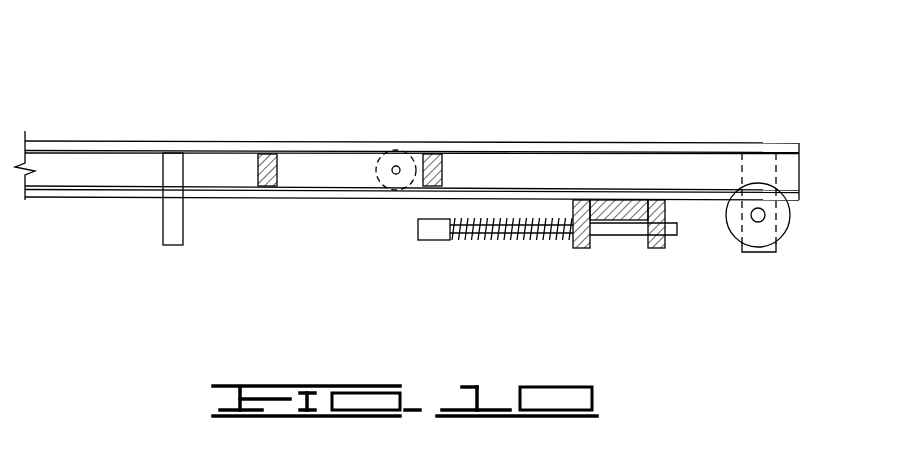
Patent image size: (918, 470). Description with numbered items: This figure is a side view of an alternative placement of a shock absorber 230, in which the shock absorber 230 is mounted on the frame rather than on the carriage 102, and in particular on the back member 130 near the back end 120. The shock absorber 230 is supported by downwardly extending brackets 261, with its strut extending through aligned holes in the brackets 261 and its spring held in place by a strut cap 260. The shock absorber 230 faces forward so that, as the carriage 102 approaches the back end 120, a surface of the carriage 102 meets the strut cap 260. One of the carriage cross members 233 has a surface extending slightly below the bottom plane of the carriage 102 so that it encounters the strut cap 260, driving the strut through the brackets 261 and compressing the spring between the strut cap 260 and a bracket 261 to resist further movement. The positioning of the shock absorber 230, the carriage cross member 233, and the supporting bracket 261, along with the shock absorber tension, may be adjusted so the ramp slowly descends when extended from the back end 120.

The carriage 102 is at (203, 113).
The back end 120 is at (722, 98).
The back member 130 is at (614, 203).
The carriage cross member 233 is at (160, 233).
The shock absorber 230 is at (474, 275).
The strut cap 260 is at (417, 240).
The bracket 261 is at (585, 246).